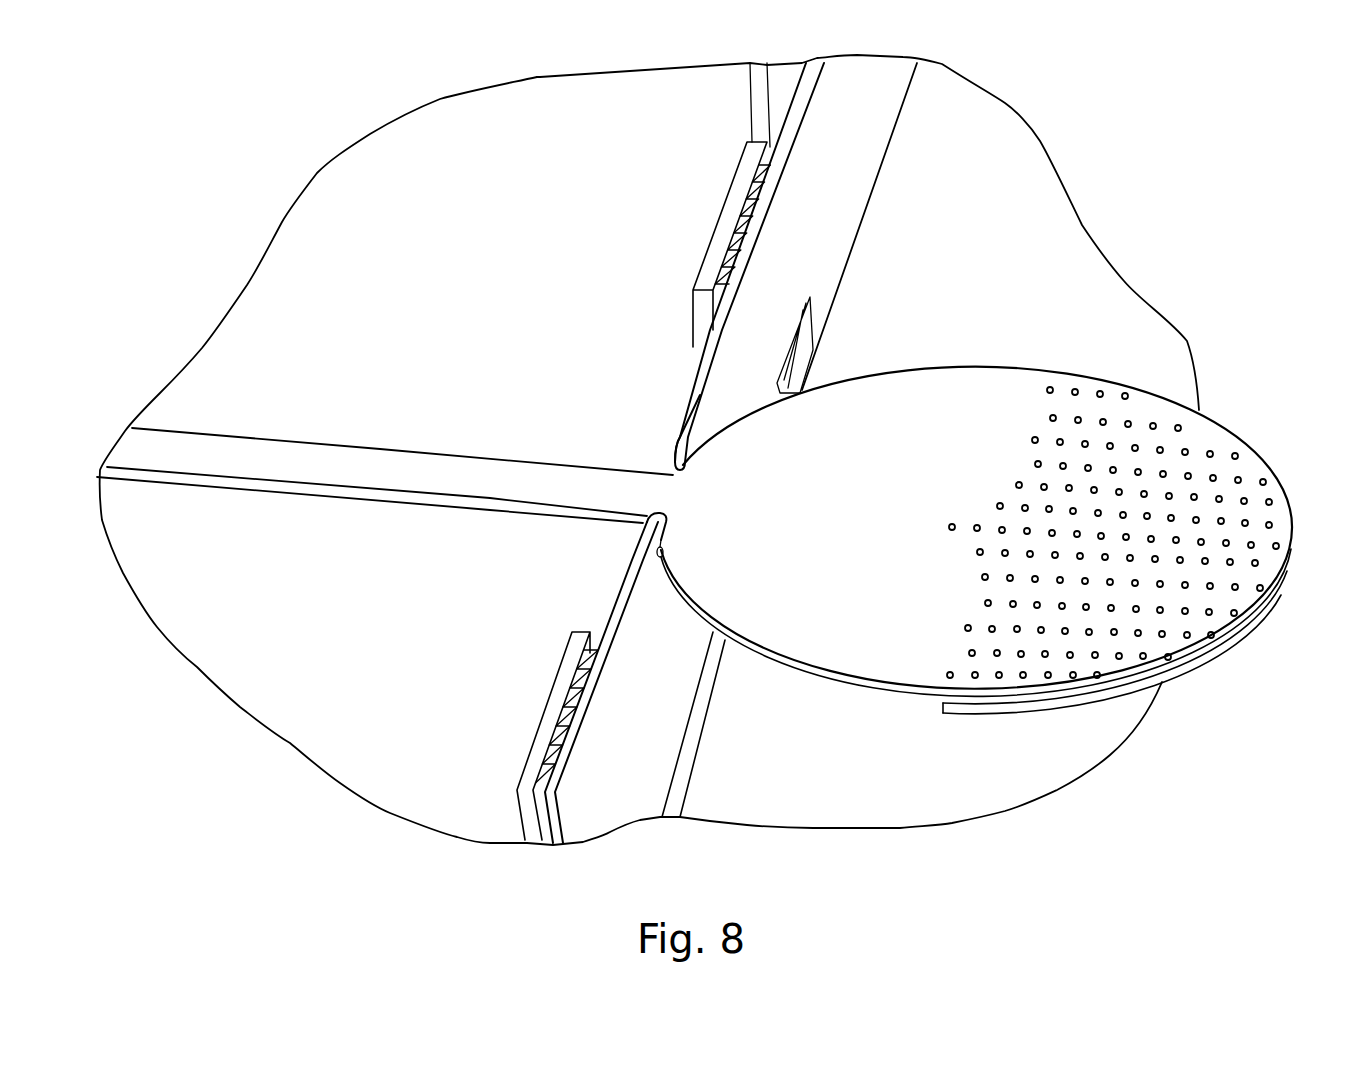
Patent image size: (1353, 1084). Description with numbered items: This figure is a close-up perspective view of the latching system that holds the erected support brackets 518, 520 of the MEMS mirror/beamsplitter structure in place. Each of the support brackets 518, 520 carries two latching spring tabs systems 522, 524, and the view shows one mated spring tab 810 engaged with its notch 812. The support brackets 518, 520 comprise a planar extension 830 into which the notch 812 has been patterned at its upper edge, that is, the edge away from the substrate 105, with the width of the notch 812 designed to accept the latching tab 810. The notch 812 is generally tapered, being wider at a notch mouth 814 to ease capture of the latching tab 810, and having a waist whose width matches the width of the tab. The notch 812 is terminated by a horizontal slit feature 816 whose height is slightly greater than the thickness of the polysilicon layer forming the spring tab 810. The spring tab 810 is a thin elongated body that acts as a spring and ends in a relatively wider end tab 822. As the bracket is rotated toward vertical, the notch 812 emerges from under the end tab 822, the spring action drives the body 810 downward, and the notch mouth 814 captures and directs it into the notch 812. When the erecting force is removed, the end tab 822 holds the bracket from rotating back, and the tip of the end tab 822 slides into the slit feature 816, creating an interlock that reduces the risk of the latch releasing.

The substrate 105 is at (537, 238).
The support bracket 518 is at (671, 205).
The support bracket 520 is at (710, 238).
The latching spring tabs system 522 is at (400, 280).
The latching spring tabs system 524 is at (514, 345).
The latching spring tab 810 is at (480, 478).
The notch 812 is at (674, 471).
The notch mouth 814 is at (672, 432).
The horizontal slit feature 816 is at (664, 550).
The end tab 822 is at (854, 570).
The planar extension 830 is at (620, 592).